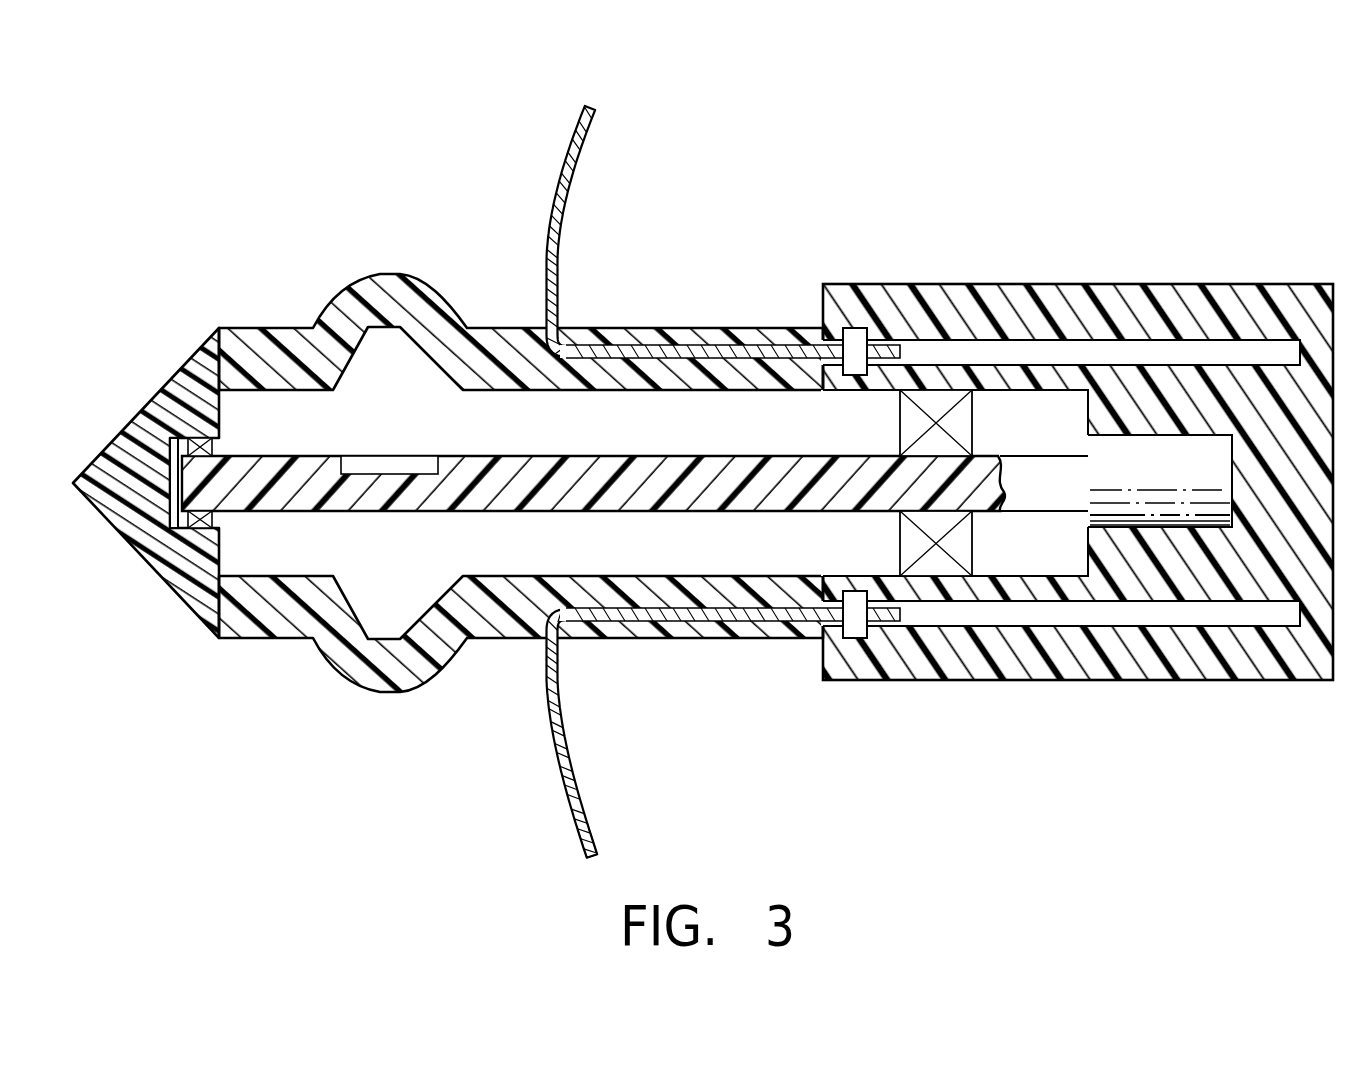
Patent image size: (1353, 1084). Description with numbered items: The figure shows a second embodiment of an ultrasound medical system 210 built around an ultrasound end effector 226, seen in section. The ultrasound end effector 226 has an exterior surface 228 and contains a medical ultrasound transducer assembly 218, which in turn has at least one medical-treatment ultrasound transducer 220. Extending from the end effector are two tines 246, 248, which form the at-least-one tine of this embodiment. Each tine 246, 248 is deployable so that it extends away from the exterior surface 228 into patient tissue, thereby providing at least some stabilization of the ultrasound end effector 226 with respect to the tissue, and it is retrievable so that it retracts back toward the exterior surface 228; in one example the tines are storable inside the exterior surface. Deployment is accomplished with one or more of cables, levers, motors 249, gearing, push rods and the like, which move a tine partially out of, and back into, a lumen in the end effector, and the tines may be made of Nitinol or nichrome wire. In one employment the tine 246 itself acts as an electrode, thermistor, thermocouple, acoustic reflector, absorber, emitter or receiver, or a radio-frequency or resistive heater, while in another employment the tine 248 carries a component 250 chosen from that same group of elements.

The ultrasound medical system 210 is at (773, 101).
The medical ultrasound transducer assembly 218 is at (422, 445).
The medical-treatment ultrasound transducer 220 is at (354, 456).
The ultrasound end effector 226 is at (450, 700).
The exterior surface 228 is at (635, 328).
The tine 246 is at (562, 169).
The tine 248 is at (559, 690).
The motor 249 is at (857, 328).
The component 250 is at (586, 822).